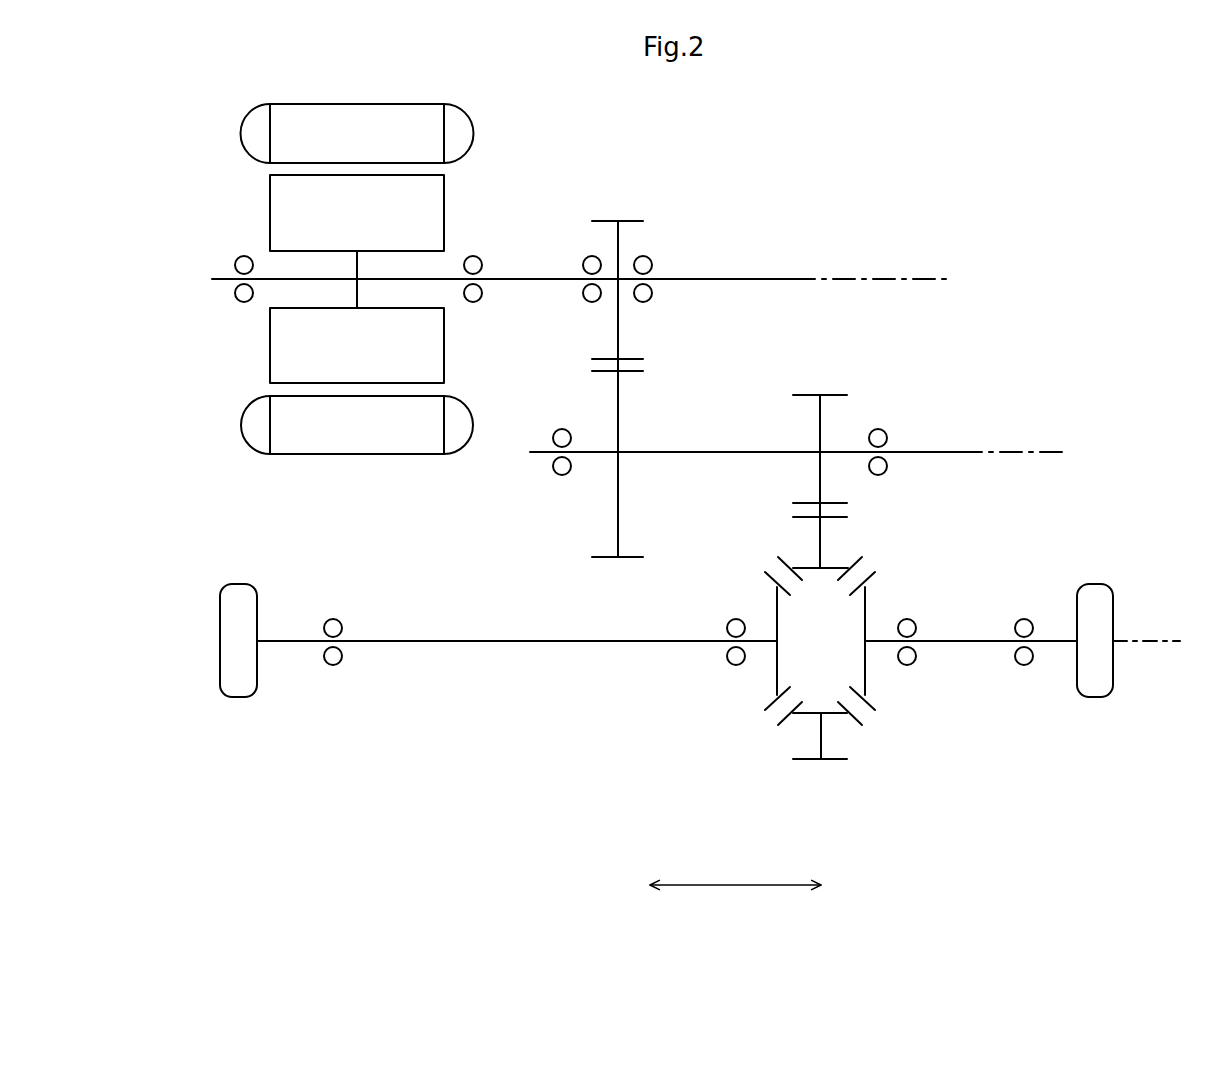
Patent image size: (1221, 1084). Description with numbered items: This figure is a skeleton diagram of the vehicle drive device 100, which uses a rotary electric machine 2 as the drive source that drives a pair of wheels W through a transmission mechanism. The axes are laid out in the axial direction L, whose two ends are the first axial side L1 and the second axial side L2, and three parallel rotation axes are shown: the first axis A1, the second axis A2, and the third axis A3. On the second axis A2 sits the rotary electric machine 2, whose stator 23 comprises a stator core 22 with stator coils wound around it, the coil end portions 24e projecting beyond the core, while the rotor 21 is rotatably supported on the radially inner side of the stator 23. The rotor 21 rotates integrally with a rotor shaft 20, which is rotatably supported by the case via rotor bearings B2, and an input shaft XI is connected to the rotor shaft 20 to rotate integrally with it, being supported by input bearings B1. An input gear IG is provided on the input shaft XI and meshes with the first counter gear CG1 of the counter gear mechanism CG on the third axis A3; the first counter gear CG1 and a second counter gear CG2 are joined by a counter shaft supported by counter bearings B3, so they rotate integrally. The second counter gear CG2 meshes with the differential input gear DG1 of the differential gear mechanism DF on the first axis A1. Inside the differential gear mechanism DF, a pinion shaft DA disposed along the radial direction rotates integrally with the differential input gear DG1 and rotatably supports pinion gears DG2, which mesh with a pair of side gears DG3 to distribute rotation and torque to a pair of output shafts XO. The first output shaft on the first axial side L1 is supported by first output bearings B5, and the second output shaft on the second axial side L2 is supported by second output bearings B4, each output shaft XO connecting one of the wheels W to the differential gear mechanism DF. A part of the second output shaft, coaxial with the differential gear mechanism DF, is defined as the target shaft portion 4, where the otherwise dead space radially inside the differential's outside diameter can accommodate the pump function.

The vehicle drive device 100 is at (995, 190).
The rotary electric machine 2 is at (492, 88).
The stator 23 is at (298, 88).
The stator core 22 is at (378, 104).
The coil end portion 24e is at (474, 134).
The rotor 21 is at (444, 210).
The rotor shaft 20 is at (418, 280).
The second axis A2 is at (599, 280).
The input shaft XI is at (508, 278).
The rotor bearings B2 is at (238, 298).
The input gear IG is at (618, 221).
The input bearings B1 is at (593, 302).
The first counter gear CG1 is at (630, 373).
The counter gear mechanism CG is at (775, 355).
The second counter gear CG2 is at (832, 395).
The third axis A3 is at (817, 453).
The counter bearings B3 is at (553, 468).
The differential gear mechanism DF is at (992, 547).
The differential input gear DG1 is at (803, 502).
The pinion gears DG2 is at (838, 568).
The side gears DG3 is at (866, 612).
The pinion shaft DA is at (807, 743).
The target shaft portion 4 is at (433, 620).
The first axis A1 is at (738, 642).
The output shafts XO is at (578, 641).
The second output bearings B4 is at (334, 665).
The first output bearings B5 is at (906, 665).
The wheels W is at (240, 697).
The axial direction L is at (737, 876).
The first axial side L1 is at (845, 885).
The second axial side L2 is at (628, 885).